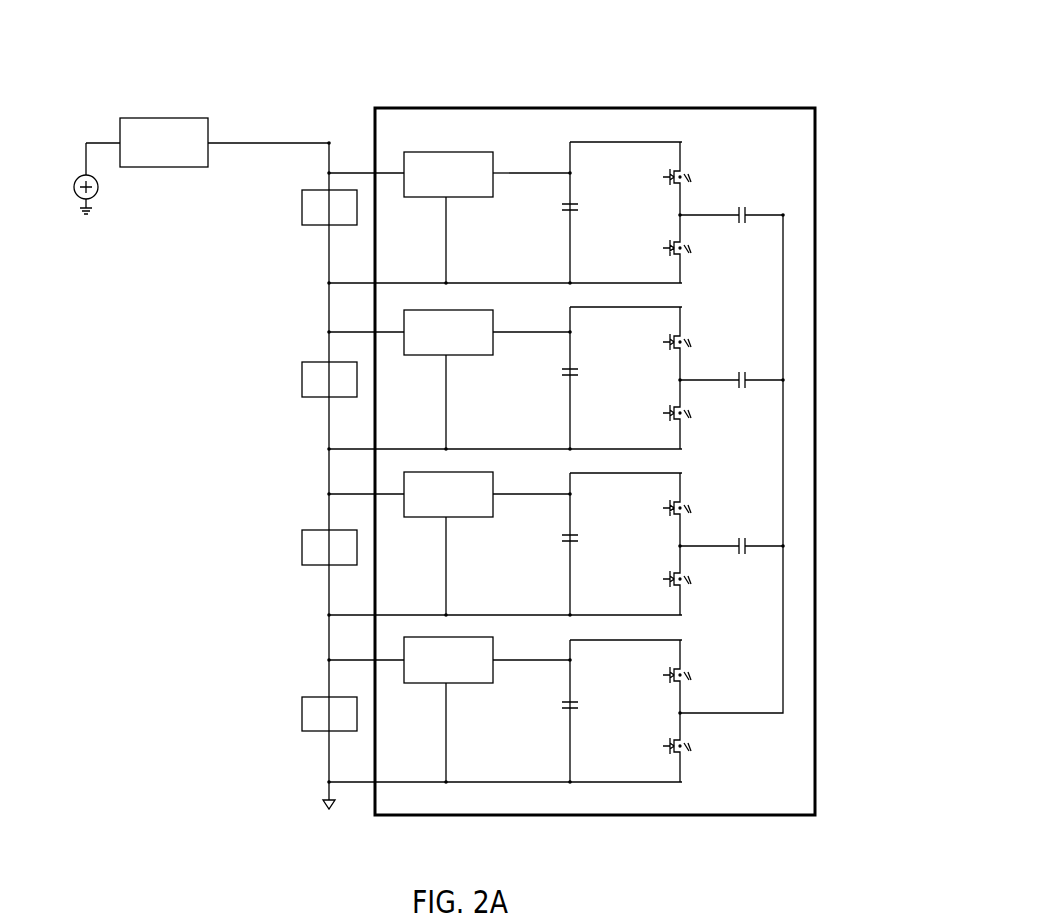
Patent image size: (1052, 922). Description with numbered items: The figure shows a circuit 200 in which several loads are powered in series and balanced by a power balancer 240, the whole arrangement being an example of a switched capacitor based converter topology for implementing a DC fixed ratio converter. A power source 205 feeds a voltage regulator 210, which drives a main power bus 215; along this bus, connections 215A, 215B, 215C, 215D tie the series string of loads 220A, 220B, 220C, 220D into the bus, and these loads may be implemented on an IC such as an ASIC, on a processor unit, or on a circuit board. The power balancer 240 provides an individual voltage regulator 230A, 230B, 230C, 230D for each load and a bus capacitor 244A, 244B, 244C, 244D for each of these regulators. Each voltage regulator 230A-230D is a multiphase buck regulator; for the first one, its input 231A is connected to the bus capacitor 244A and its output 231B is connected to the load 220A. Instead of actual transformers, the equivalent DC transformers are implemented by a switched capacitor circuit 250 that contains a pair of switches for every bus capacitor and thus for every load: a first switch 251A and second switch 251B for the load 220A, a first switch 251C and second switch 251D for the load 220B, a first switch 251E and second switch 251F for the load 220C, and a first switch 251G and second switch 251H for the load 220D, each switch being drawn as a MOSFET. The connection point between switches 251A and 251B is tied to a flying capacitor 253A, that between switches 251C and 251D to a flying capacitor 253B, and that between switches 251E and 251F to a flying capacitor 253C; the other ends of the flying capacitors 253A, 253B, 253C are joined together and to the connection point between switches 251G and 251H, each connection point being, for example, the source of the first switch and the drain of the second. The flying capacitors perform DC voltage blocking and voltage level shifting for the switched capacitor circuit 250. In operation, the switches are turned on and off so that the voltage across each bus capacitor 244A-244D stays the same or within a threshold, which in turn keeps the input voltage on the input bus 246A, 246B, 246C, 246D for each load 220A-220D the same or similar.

The circuit 200 is at (67, 35).
The power source 205 is at (120, 200).
The voltage regulator 210 is at (167, 110).
The main power bus 215 is at (278, 442).
The connection 215A is at (446, 310).
The connection 215B is at (445, 470).
The connection 215C is at (445, 644).
The connection 215D is at (447, 809).
The load 220A is at (282, 224).
The load 220B is at (282, 391).
The load 220C is at (282, 563).
The load 220D is at (282, 729).
The voltage regulator 230A is at (472, 217).
The voltage regulator 230B is at (433, 379).
The voltage regulator 230C is at (433, 543).
The voltage regulator 230D is at (433, 709).
The input 231A is at (461, 113).
The output 231B is at (352, 108).
The power balancer 240 is at (595, 428).
The bus capacitor 244A is at (648, 164).
The bus capacitor 244B is at (659, 393).
The bus capacitor 244C is at (661, 560).
The bus capacitor 244D is at (651, 755).
The input bus 246A is at (531, 208).
The input bus 246B is at (531, 369).
The input bus 246C is at (531, 529).
The input bus 246D is at (531, 698).
The switched capacitor circuit 250 is at (743, 379).
The first switch 251A is at (754, 143).
The second switch 251B is at (779, 249).
The first switch 251C is at (779, 340).
The second switch 251D is at (779, 414).
The first switch 251E is at (779, 508).
The second switch 251F is at (779, 588).
The first switch 251G is at (780, 676).
The second switch 251H is at (777, 763).
The flying capacitor 253A is at (785, 166).
The flying capacitor 253B is at (786, 362).
The flying capacitor 253C is at (786, 528).